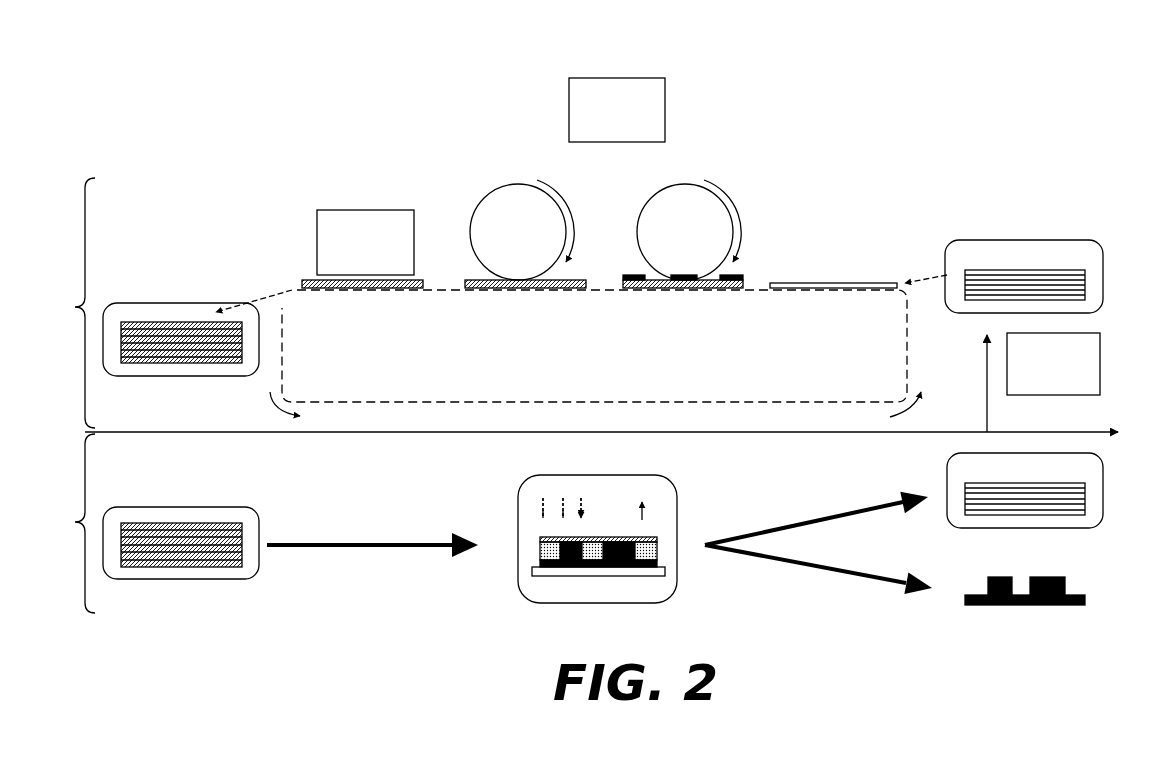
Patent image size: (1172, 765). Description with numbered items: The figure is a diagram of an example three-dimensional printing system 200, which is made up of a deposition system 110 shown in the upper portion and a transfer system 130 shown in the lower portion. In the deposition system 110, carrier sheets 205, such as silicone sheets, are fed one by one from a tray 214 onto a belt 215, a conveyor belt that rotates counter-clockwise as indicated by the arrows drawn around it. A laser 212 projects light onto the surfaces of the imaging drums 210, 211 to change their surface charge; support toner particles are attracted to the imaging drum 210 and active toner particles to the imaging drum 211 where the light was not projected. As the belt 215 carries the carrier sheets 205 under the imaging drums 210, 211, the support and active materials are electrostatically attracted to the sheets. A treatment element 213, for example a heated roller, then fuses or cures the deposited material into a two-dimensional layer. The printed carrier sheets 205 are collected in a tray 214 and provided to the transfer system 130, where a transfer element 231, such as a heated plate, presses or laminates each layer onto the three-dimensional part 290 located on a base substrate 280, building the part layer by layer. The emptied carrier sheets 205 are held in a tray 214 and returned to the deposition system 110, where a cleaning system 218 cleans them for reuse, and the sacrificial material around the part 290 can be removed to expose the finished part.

The 3D printing system 200 is at (850, 162).
The deposition system 110 is at (66, 303).
The transfer system 130 is at (66, 523).
The laser 212 is at (620, 77).
The treatment element 213 is at (375, 209).
The imaging drum 211 is at (518, 183).
The imaging drum 210 is at (695, 180).
The tray 214 is at (165, 303).
The carrier sheet 205 is at (1058, 256).
The belt 215 is at (927, 350).
The cleaning system 218 is at (1112, 347).
The transfer element 231 is at (597, 476).
The 3D part 290 is at (637, 540).
The base substrate 280 is at (622, 577).